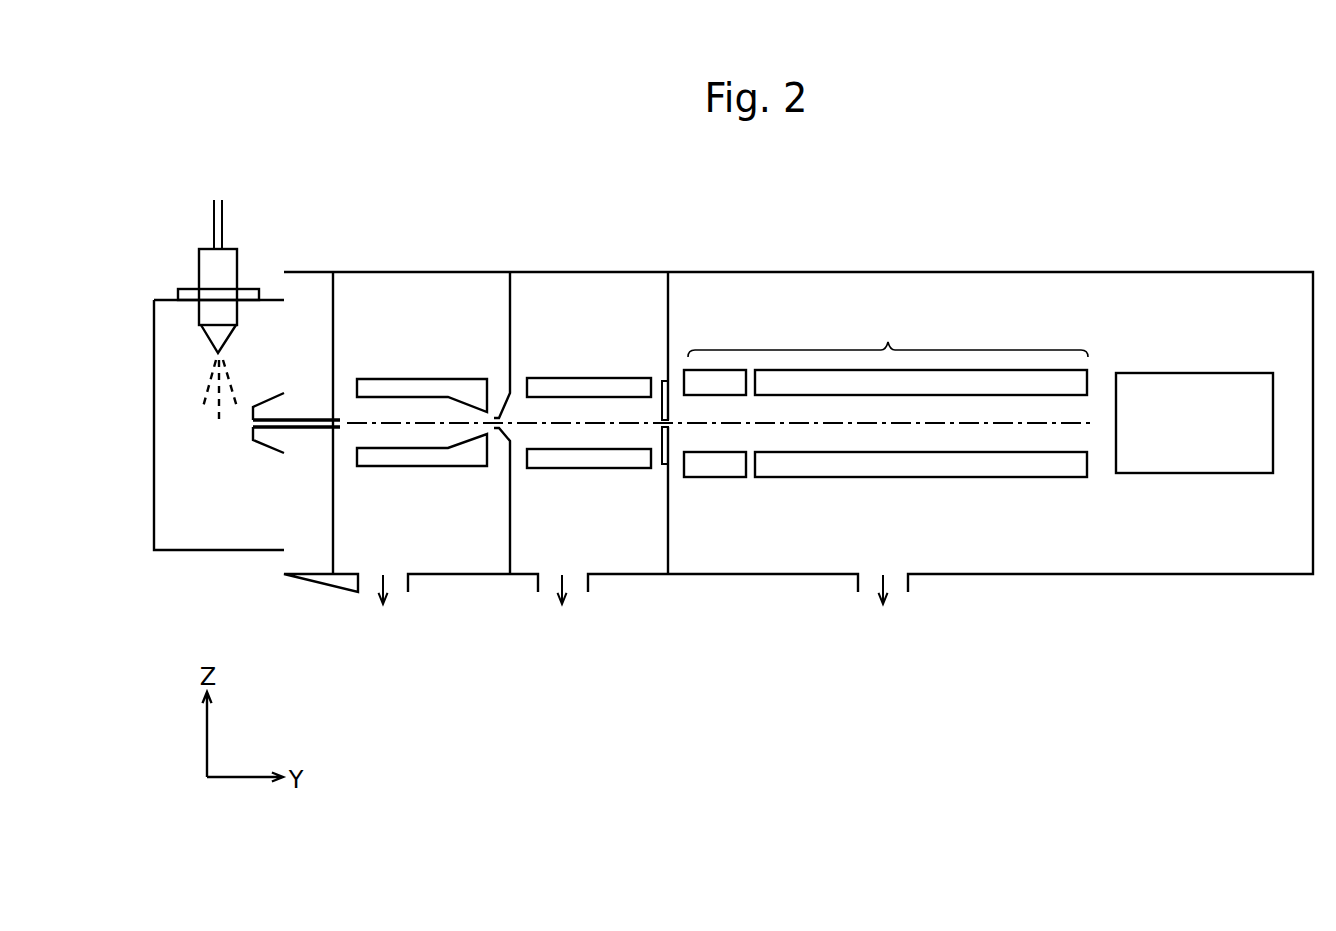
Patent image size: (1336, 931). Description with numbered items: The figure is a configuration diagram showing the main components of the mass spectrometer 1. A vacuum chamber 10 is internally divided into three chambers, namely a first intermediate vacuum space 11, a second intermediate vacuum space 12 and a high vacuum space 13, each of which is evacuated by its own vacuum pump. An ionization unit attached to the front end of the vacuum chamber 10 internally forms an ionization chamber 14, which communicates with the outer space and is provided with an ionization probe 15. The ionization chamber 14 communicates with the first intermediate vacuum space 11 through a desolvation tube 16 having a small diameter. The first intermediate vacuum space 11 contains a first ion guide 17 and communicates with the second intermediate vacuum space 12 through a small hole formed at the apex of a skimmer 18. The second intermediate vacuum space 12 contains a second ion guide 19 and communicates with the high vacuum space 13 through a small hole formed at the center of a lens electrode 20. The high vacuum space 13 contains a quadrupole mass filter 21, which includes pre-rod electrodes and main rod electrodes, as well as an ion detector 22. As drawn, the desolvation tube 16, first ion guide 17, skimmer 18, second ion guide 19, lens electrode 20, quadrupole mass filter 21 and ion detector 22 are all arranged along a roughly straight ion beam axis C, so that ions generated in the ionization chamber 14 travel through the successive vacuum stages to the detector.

The mass spectrometer 1 is at (1122, 180).
The vacuum chamber 10 is at (780, 272).
The first intermediate vacuum space 11 is at (446, 555).
The second intermediate vacuum space 12 is at (622, 555).
The high vacuum space 13 is at (1014, 559).
The ionization chamber 14 is at (194, 537).
The ionization probe 15 is at (238, 262).
The desolvation tube 16 is at (305, 417).
The first ion guide 17 is at (450, 379).
The skimmer 18 is at (503, 405).
The second ion guide 19 is at (607, 380).
The lens electrode 20 is at (672, 378).
The quadrupole mass filter 21 is at (888, 345).
The ion detector 22 is at (1212, 373).
The ion beam axis C is at (1025, 425).